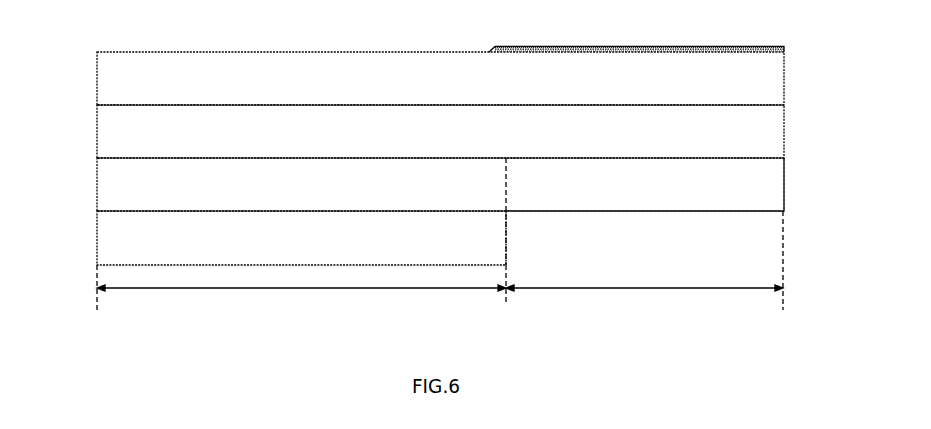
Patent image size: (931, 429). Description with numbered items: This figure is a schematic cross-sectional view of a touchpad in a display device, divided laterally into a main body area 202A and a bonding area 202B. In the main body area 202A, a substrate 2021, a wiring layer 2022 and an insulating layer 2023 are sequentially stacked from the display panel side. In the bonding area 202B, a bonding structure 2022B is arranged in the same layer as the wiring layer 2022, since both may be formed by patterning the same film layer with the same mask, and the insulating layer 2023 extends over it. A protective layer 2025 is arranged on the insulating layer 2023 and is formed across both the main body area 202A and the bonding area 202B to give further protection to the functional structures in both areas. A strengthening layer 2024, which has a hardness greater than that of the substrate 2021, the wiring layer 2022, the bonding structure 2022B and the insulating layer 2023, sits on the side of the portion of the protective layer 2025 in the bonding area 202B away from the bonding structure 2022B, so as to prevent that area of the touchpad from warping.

The substrate 2021 is at (103, 240).
The wiring layer 2022 is at (103, 182).
The bonding structure 2022B is at (770, 188).
The insulating layer 2023 is at (103, 133).
The strengthening layer 2024 is at (545, 47).
The protective layer 2025 is at (103, 80).
The main body area 202A is at (301, 292).
The bonding area 202B is at (644, 265).